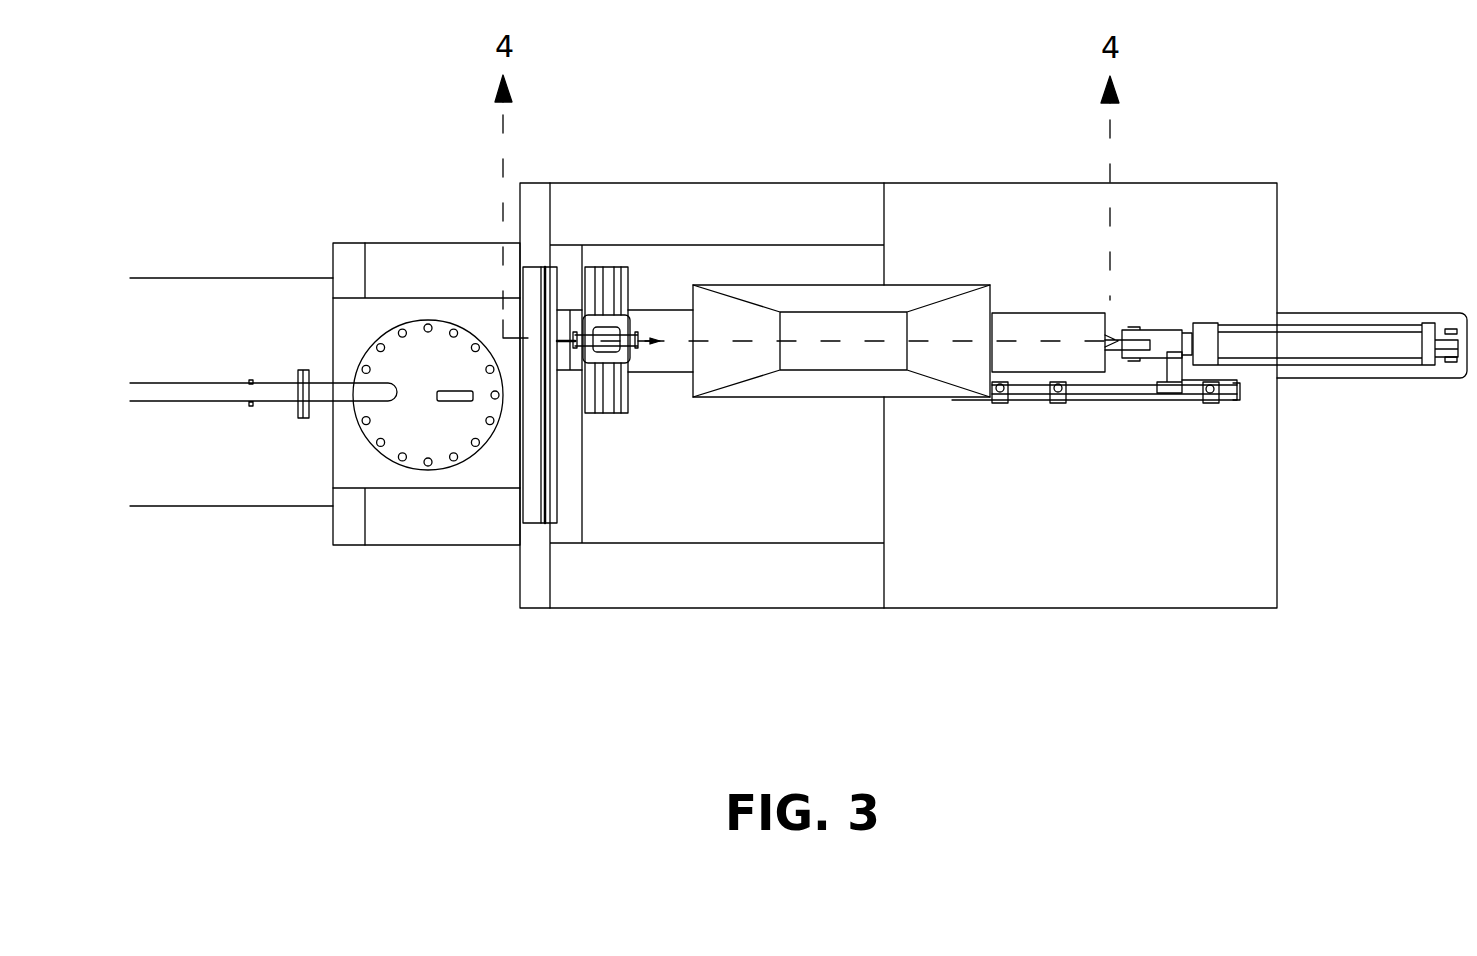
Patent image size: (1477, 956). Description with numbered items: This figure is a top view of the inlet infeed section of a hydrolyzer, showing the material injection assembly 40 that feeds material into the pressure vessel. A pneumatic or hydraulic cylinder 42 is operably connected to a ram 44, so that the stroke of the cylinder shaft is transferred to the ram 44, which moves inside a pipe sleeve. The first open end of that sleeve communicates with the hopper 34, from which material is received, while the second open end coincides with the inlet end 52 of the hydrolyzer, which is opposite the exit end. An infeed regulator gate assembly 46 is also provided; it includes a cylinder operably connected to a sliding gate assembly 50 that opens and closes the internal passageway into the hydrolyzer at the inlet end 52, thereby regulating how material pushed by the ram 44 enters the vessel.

The hopper 34 is at (842, 298).
The material injection assembly 40 is at (1252, 322).
The pneumatic or hydraulic cylinder 42 is at (1308, 347).
The ram 44 is at (1050, 325).
The infeed regulator gate assembly 46 is at (590, 325).
The sliding gate assembly 50 is at (606, 395).
The inlet end 52 is at (543, 494).